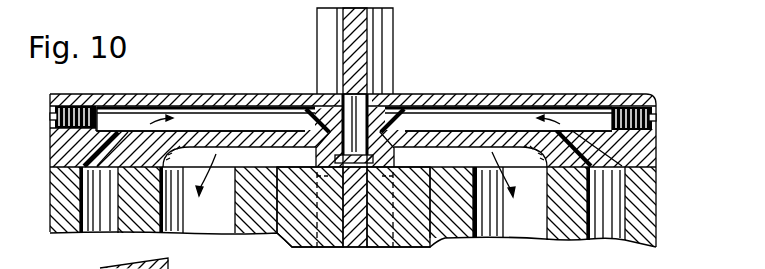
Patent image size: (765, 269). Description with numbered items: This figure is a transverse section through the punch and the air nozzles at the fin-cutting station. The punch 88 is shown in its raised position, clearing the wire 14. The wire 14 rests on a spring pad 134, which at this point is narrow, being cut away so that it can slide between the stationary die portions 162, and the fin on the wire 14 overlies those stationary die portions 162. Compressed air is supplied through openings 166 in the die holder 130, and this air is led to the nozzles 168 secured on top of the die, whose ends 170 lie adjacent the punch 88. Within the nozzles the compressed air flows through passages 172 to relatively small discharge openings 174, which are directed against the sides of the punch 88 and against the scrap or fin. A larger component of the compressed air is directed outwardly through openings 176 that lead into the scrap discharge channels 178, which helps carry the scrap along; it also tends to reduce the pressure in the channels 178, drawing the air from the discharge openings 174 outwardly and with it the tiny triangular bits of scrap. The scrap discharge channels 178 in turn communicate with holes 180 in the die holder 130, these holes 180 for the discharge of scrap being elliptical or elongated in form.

The wire 14 is at (370, 151).
The punch 88 is at (390, 36).
The die holder 130 is at (657, 205).
The spring pad 134 is at (355, 247).
The stationary die portions 162 is at (312, 247).
The openings 166 is at (98, 226).
The nozzles 168 is at (171, 94).
The ends 170 is at (340, 92).
The passages 172 is at (204, 121).
The discharge openings 174 is at (332, 148).
The openings 176 is at (231, 144).
The scrap discharge channels 178 is at (310, 125).
The holes 180 is at (217, 226).